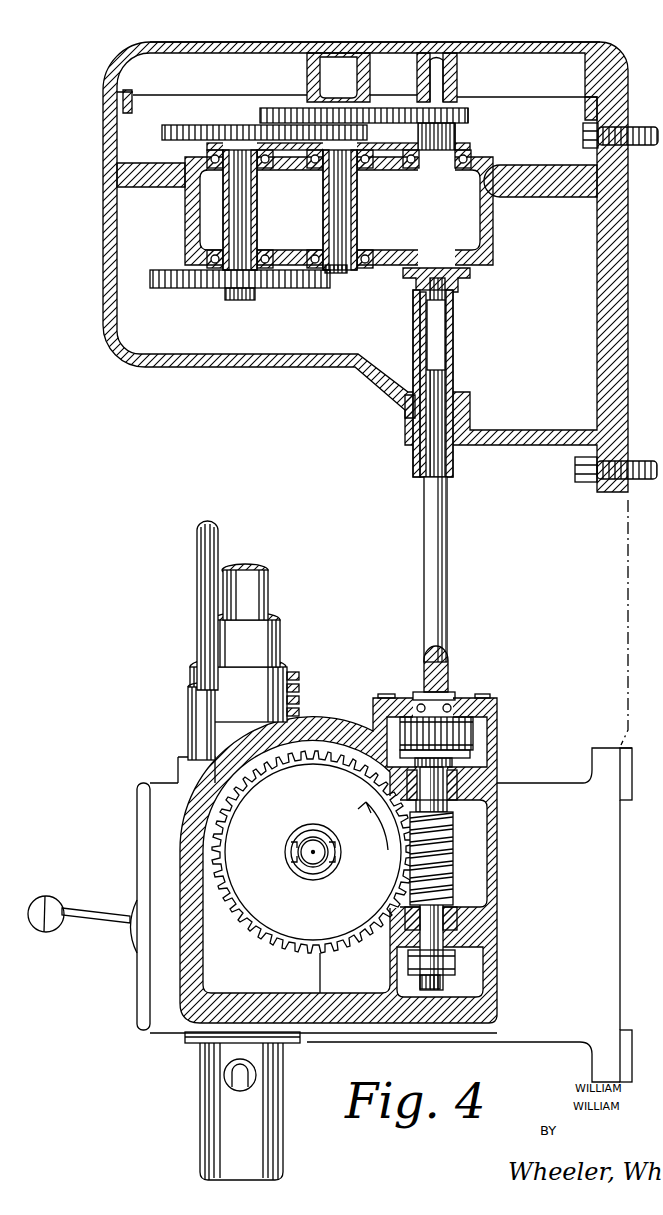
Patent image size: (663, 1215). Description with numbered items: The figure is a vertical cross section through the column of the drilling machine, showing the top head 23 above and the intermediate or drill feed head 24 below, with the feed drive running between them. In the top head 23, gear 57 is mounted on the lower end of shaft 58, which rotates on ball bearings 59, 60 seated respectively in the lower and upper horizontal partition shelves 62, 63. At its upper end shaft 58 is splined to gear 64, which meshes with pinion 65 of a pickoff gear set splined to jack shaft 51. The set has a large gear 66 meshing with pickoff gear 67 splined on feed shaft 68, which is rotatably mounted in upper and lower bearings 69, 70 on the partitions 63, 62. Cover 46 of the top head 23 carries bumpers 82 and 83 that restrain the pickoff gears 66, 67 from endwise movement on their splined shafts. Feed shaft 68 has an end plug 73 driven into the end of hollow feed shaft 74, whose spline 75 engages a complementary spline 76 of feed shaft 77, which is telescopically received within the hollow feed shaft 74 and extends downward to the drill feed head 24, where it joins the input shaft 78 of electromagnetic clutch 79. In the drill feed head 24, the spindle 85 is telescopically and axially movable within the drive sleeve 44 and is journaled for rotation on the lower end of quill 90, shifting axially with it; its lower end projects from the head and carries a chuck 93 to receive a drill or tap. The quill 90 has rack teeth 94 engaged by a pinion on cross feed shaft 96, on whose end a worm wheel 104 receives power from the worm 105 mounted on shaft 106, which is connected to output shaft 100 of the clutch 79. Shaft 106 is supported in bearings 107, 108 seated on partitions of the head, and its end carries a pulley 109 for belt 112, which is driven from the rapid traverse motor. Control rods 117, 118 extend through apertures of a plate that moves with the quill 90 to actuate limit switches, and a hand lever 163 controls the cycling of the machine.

The top head 23 is at (103, 246).
The drill feed head 24 is at (334, 718).
The drive sleeve 44 is at (278, 632).
The cover 46 is at (303, 32).
The jack shaft 51 is at (352, 206).
The gear 57 is at (282, 290).
The shaft 58 is at (247, 208).
The ball bearing 59 is at (258, 256).
The ball bearing 60 is at (258, 168).
The lower horizontal partition shelf 62 is at (297, 253).
The upper horizontal partition shelf 63 is at (372, 168).
The gear 64 is at (207, 112).
The pinion 65 is at (418, 139).
The large gear 66 is at (275, 108).
The pickoff gear 67 is at (468, 113).
The feed shaft 68 is at (463, 157).
The upper bearing 69 is at (458, 137).
The lower bearing 70 is at (466, 270).
The end plug 73 is at (450, 298).
The hollow feed shaft 74 is at (455, 334).
The spline 75 is at (420, 355).
The spline 76 is at (410, 392).
The feed shaft 77 is at (440, 628).
The input shaft 78 is at (440, 672).
The electromagnetic clutch 79 is at (452, 722).
The bumper 82 is at (355, 77).
The bumper 83 is at (458, 76).
The spindle 85 is at (268, 592).
The quill 90 is at (290, 655).
The chuck 93 is at (282, 1118).
The rack teeth 94 is at (295, 690).
The cross feed shaft 96 is at (308, 853).
The output shaft 100 is at (455, 757).
The worm wheel 104 is at (280, 928).
The worm 105 is at (452, 845).
The shaft 106 is at (455, 813).
The bearing 107 is at (455, 790).
The bearing 108 is at (460, 920).
The pulley 109 is at (455, 955).
The belt 112 is at (455, 965).
The control rod 117 is at (205, 600).
The control rod 118 is at (200, 700).
The hand lever 163 is at (92, 934).